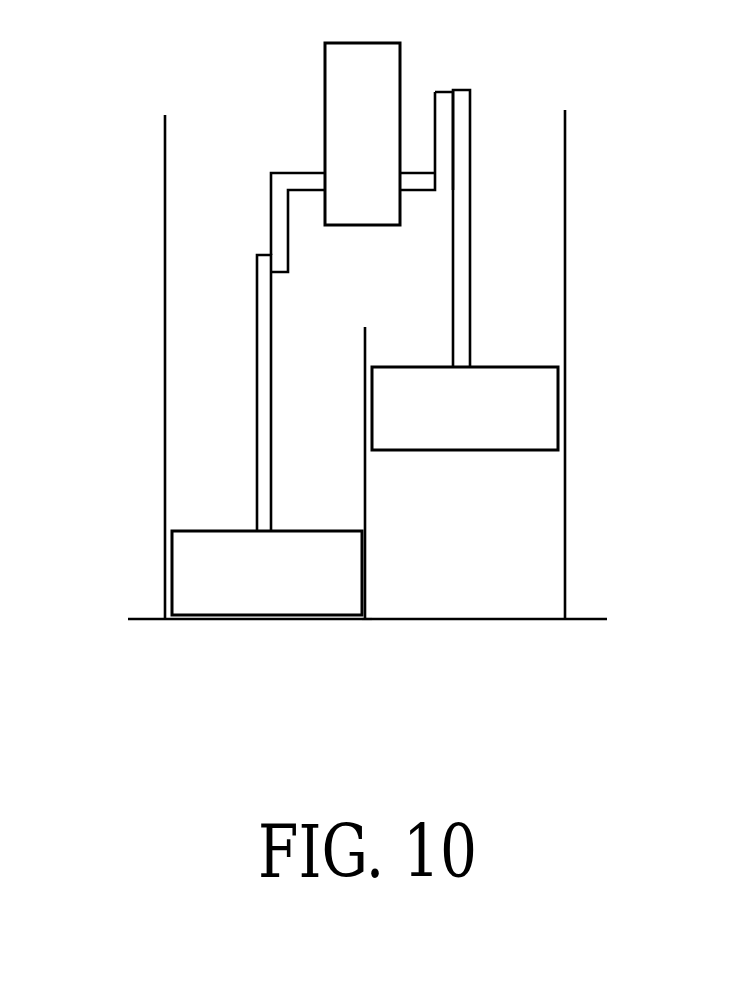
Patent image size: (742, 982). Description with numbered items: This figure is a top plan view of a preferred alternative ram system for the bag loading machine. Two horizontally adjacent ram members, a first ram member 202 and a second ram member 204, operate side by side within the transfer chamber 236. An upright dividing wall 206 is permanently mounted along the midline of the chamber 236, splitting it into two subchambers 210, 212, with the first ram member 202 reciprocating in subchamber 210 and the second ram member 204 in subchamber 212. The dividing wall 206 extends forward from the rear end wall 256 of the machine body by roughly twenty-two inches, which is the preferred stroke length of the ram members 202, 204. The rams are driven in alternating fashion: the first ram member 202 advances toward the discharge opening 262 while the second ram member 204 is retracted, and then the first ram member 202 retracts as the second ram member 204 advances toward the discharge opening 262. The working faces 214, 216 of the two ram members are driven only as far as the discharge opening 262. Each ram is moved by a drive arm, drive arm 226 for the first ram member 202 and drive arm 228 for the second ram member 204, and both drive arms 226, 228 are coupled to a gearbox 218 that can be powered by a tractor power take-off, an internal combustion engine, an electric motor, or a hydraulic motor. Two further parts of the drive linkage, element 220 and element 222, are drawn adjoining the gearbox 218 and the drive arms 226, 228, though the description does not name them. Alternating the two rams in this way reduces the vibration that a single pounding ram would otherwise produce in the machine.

The first ram member 202 is at (190, 580).
The second ram member 204 is at (542, 407).
The dividing wall 206 is at (365, 357).
The subchamber 210 is at (196, 465).
The subchamber 212 is at (520, 583).
The working face 214 is at (215, 621).
The working face 216 is at (430, 452).
The gearbox 218 is at (378, 72).
The connecting arm 220 is at (275, 208).
The right post 222 is at (445, 127).
The drive arm 226 is at (265, 300).
The drive arm 228 is at (465, 250).
The transfer chamber 236 is at (567, 545).
The rear end wall 256 is at (143, 622).
The discharge opening 262 is at (340, 622).